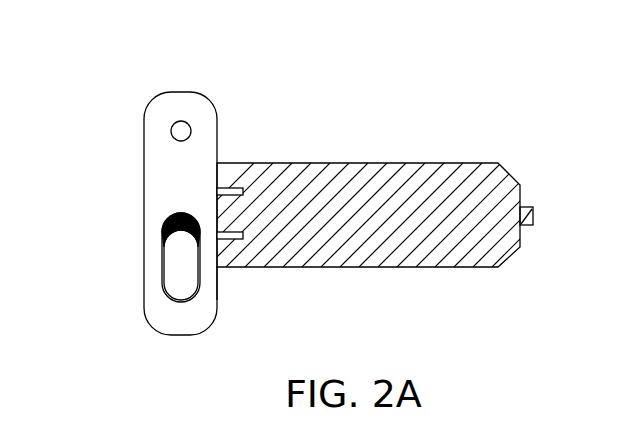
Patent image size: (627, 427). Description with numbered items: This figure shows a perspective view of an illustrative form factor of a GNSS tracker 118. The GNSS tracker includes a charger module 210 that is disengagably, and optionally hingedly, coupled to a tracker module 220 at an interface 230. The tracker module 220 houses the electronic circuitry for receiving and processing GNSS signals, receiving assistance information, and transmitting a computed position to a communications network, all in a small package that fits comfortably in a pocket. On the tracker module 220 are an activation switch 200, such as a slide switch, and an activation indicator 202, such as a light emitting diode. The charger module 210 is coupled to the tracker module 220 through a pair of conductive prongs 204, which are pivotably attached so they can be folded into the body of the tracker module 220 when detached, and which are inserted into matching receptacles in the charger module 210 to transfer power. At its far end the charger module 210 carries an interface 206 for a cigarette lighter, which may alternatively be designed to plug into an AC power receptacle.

The GNSS Tracker 118 is at (459, 103).
The activation switch 200 is at (178, 262).
The activation indicator 202 is at (171, 131).
The conductive prongs 204 is at (232, 187).
The interface 206 is at (552, 193).
The charger module 210 is at (368, 162).
The tracker module 220 is at (180, 92).
The interface 230 is at (217, 268).